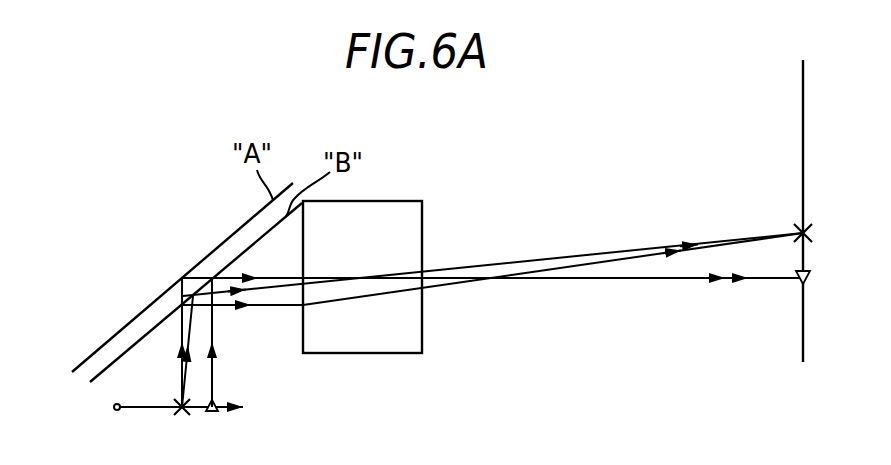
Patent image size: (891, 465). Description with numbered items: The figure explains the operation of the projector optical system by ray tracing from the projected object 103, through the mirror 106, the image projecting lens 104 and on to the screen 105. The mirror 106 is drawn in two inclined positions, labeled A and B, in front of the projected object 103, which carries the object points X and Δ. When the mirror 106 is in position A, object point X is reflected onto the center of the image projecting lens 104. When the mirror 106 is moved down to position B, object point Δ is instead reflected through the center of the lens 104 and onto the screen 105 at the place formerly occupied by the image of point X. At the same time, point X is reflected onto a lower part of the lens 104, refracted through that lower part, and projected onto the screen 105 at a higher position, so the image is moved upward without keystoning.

The projected object 103 is at (214, 411).
The image projecting lens 104 is at (398, 200).
The screen 105 is at (825, 110).
The mirror 106 is at (88, 357).